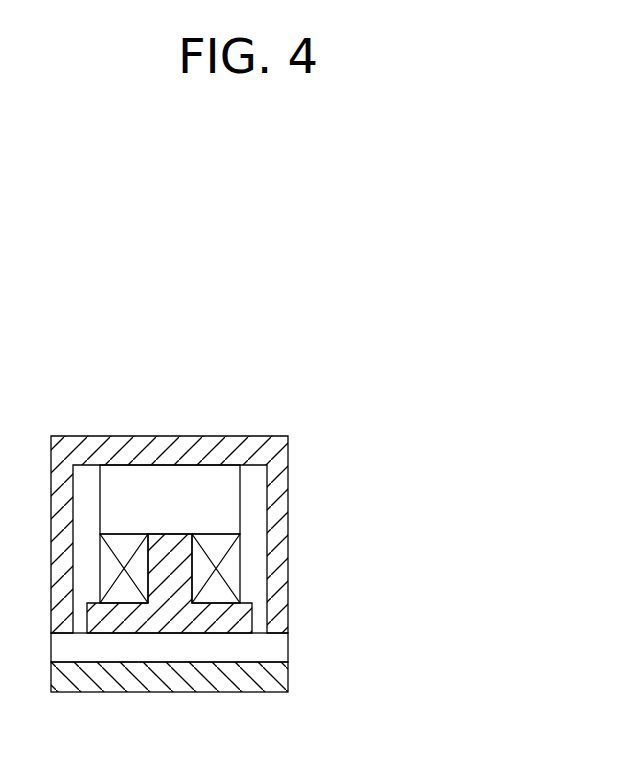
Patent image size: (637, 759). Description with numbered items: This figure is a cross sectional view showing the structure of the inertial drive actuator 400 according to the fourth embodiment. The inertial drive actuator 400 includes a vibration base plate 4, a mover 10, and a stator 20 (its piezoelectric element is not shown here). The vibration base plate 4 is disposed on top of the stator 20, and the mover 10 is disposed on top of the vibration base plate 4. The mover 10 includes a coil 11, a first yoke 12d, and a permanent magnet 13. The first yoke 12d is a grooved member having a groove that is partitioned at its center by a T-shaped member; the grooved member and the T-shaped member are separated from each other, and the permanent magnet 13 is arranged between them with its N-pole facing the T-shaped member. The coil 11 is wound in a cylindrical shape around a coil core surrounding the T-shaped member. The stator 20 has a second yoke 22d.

The inertial drive actuator 400 is at (347, 307).
The mover 10 is at (417, 424).
The first yoke 12d is at (183, 542).
The permanent magnet 13 is at (240, 488).
The coil 11 is at (232, 562).
The vibration base plate 4 is at (280, 647).
The stator 20 is at (417, 650).
The second yoke 22d is at (280, 675).